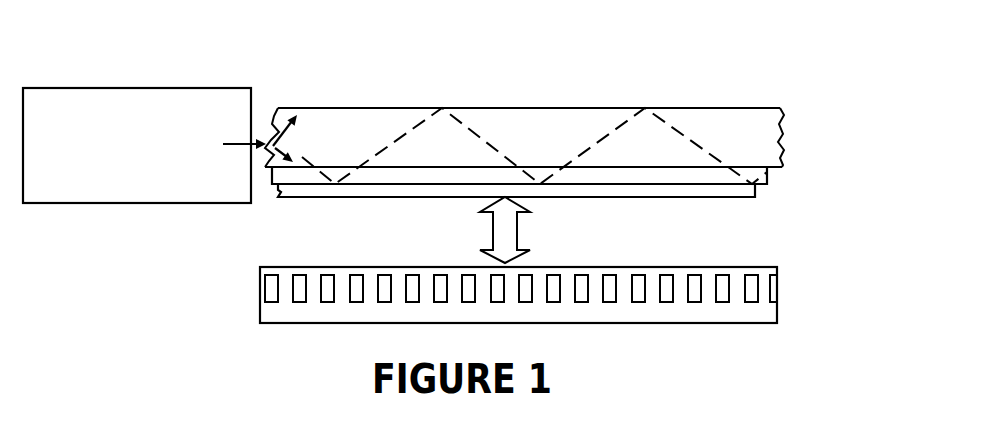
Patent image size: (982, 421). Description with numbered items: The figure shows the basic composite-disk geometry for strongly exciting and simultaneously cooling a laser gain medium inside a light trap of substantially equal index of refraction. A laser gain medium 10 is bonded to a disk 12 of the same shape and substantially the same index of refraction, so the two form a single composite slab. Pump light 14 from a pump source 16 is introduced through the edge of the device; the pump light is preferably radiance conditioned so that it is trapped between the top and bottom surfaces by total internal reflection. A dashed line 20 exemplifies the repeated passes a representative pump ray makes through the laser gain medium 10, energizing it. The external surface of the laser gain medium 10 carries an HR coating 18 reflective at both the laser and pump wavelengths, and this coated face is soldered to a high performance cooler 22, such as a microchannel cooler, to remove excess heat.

The laser gain medium 10 is at (774, 178).
The disk 12 is at (788, 127).
The pump light 14 is at (264, 142).
The pump source 16 is at (137, 145).
The coating 18 is at (757, 193).
The dashed line 20 is at (405, 130).
The high performance cooler 22 is at (779, 308).